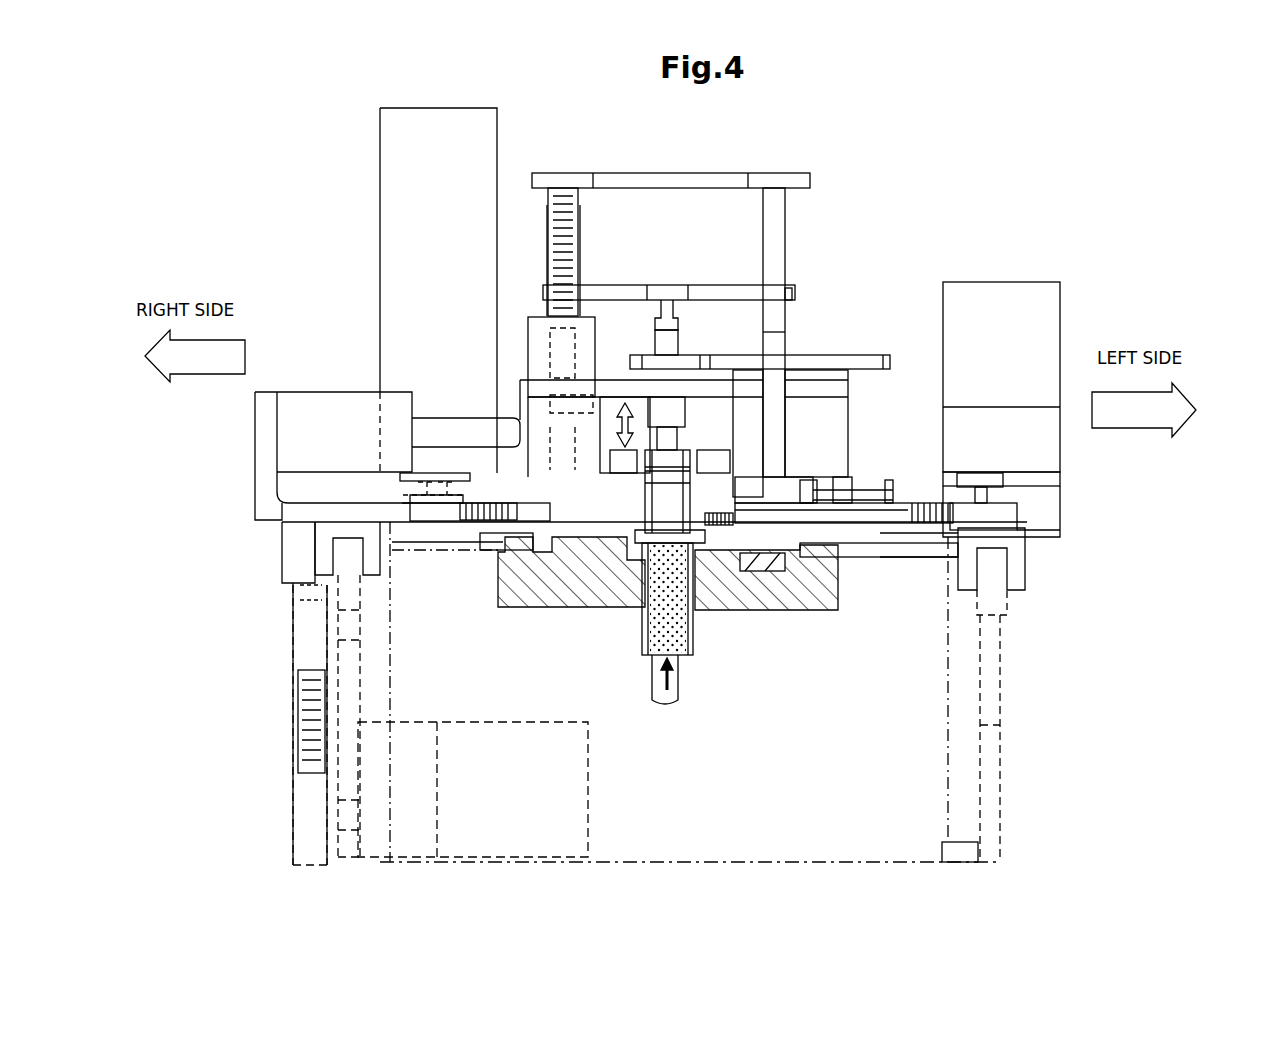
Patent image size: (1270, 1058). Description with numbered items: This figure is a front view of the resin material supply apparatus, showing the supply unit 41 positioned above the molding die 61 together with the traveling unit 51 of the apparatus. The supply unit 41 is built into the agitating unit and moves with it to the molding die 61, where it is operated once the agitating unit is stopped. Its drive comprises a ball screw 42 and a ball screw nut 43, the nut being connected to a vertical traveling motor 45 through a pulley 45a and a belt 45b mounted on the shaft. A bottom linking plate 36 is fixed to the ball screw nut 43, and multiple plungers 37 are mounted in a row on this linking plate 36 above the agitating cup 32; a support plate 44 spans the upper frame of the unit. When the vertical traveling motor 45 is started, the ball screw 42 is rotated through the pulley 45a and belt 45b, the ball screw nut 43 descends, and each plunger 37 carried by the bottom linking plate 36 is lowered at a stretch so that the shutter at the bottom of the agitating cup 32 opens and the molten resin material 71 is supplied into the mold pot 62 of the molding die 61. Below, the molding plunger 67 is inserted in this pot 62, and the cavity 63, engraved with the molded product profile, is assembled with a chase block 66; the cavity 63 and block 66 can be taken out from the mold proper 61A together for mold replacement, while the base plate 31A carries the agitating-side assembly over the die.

The supply unit 41 is at (893, 160).
The ball screw 42 is at (550, 212).
The ball screw nut 43 is at (530, 330).
The support plate 44 is at (625, 285).
The vertical traveling motor 45 is at (392, 222).
The pulley 45a is at (432, 520).
The belt 45b is at (488, 522).
The bottom linking plate 36 is at (618, 383).
The plunger 37 is at (685, 440).
The agitating cup 32 is at (700, 487).
The base plate 31A is at (893, 548).
The resin material 71 is at (588, 610).
The chase block 66 is at (803, 613).
The cavity 63 is at (743, 553).
The mold pot 62 is at (658, 574).
The molding plunger 67 is at (678, 630).
The molding die 61 is at (955, 753).
The mold proper 61A is at (783, 852).
The traveling unit 51 is at (288, 735).